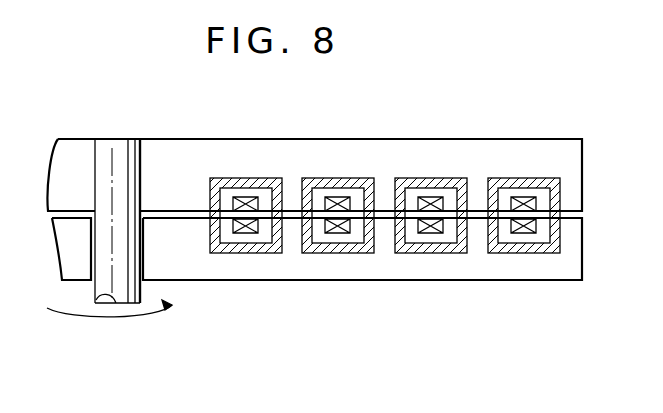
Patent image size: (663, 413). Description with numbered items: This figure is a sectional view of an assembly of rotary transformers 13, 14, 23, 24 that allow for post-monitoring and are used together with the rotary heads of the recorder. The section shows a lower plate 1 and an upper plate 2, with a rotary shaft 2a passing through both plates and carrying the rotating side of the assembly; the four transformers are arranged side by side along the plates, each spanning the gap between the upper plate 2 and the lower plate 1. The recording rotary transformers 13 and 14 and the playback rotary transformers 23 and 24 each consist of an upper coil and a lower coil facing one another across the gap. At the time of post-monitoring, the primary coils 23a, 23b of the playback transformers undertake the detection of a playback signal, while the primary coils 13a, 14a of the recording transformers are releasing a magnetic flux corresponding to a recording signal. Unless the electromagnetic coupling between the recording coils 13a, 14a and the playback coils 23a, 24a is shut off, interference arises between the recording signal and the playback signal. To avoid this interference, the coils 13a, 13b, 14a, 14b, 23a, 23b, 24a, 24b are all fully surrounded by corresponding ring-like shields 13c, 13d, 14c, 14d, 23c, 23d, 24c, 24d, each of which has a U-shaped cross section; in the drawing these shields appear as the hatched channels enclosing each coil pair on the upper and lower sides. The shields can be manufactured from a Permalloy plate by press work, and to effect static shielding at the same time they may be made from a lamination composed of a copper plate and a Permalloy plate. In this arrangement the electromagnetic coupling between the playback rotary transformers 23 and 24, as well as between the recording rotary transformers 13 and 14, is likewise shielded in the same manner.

The lower plate 1 is at (575, 242).
The upper plate 2 is at (582, 155).
The rotary shaft 2a is at (113, 142).
The recording rotary transformer 13 is at (334, 264).
The primary coil 13a is at (344, 234).
The coil 13b is at (344, 200).
The ring-like shield 13c is at (318, 256).
The ring-like shield 13d is at (308, 192).
The recording rotary transformer 14 is at (230, 264).
The primary coil 14a is at (250, 234).
The coil 14b is at (243, 200).
The ring-like shield 14c is at (218, 256).
The ring-like shield 14d is at (212, 189).
The playback rotary transformer 23 is at (523, 263).
The primary coil 23a is at (527, 234).
The primary coil 23b is at (530, 200).
The ring-like shield 23c is at (507, 256).
The ring-like shield 23d is at (494, 192).
The playback rotary transformer 24 is at (428, 263).
The coil 24a is at (434, 234).
The coil 24b is at (436, 200).
The ring-like shield 24c is at (412, 256).
The ring-like shield 24d is at (401, 192).